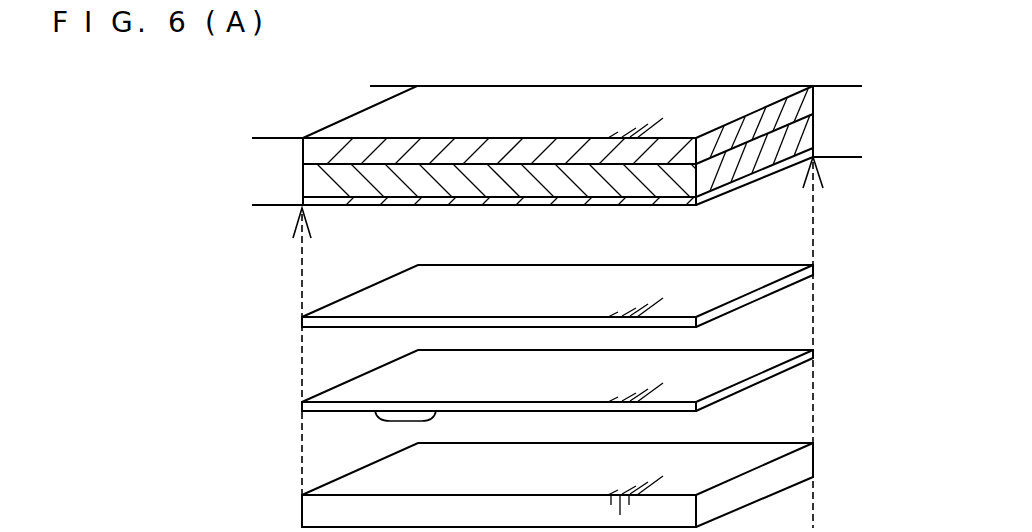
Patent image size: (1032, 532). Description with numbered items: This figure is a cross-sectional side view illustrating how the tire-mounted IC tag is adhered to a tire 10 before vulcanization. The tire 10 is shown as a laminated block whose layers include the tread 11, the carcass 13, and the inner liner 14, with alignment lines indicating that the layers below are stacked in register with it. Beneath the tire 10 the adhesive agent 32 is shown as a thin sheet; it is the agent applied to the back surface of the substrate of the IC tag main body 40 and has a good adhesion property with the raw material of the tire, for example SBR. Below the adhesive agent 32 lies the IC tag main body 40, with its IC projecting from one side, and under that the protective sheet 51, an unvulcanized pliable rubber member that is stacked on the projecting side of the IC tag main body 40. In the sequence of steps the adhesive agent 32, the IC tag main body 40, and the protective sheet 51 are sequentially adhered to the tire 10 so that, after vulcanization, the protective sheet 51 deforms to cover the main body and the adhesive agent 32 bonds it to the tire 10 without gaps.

The tire 10 is at (306, 118).
The tread 11 is at (315, 153).
The carcass 13 is at (310, 180).
The inner liner 14 is at (313, 200).
The adhesive agent 32 is at (413, 292).
The IC tag main body 40 is at (413, 392).
The protective sheet 51 is at (413, 483).